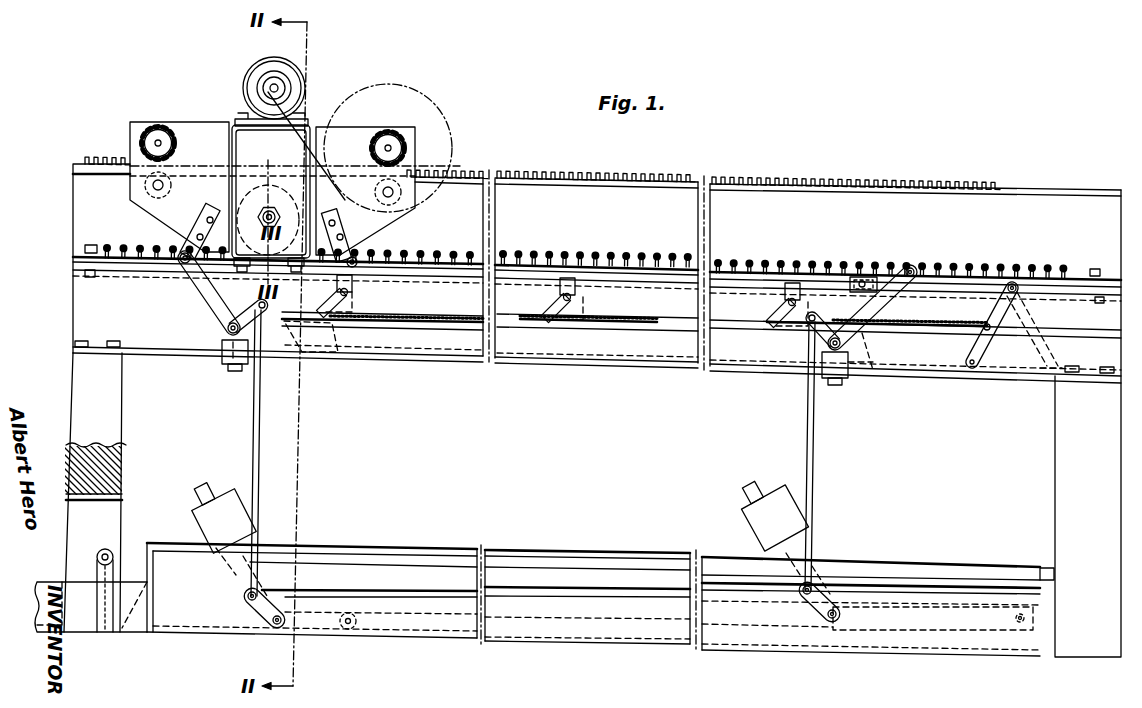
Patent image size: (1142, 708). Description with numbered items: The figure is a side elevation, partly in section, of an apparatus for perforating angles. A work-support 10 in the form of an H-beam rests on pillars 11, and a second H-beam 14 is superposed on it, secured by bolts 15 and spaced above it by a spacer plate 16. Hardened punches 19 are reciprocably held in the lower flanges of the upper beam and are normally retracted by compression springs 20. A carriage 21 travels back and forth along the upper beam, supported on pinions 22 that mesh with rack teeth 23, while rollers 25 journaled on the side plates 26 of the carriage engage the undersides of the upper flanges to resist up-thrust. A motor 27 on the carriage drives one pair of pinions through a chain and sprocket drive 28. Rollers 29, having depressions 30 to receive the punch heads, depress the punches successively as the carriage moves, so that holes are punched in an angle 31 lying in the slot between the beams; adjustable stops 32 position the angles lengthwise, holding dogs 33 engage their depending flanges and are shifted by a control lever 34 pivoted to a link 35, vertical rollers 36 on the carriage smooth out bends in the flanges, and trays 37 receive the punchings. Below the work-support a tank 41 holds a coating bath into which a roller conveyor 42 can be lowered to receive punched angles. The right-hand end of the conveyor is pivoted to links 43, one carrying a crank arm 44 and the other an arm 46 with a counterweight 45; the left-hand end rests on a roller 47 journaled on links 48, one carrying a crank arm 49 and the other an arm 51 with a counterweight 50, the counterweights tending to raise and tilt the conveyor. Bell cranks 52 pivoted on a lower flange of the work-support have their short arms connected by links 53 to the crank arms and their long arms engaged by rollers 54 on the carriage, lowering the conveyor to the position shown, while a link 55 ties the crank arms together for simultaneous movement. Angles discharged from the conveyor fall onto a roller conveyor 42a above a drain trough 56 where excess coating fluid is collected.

The work-support 10 is at (78, 316).
The pillars 11 is at (72, 410).
The H-beam 14 is at (78, 201).
The bolts 15 is at (88, 278).
The spacer plate 16 is at (82, 262).
The punch 19 is at (564, 245).
The compression springs 20 is at (626, 246).
The carriage 21 is at (200, 126).
The pinions 22 is at (157, 127).
The rack teeth 23 is at (116, 161).
The rollers 25 is at (146, 188).
The side plates 26 is at (196, 229).
The motor 27 is at (262, 72).
The chain and sprocket drive 28 is at (353, 92).
The rollers 29 is at (240, 194).
The depressions 30 is at (276, 184).
The angle 31 is at (781, 256).
The adjustable stops 32 is at (866, 276).
The holding dogs 33 is at (320, 318).
The control lever 34 is at (980, 340).
The link 35 is at (447, 318).
The vertical rollers 36 is at (238, 270).
The trays 37 is at (597, 339).
The tank 41 is at (718, 648).
The roller conveyor 42 is at (505, 616).
The roller conveyor 42a is at (100, 552).
The links 43 is at (958, 622).
The crank arm 44 is at (826, 602).
The counterweight 45 is at (748, 522).
The arm 46 is at (752, 488).
The roller 47 is at (347, 633).
The links 48 is at (320, 632).
The crank arm 49 is at (258, 626).
The counterweight 50 is at (200, 517).
The arm 51 is at (203, 487).
The bell cranks 52 is at (205, 300).
The links 53 is at (254, 392).
The rollers 54 is at (188, 264).
The link 55 is at (619, 588).
The drain trough 56 is at (48, 583).